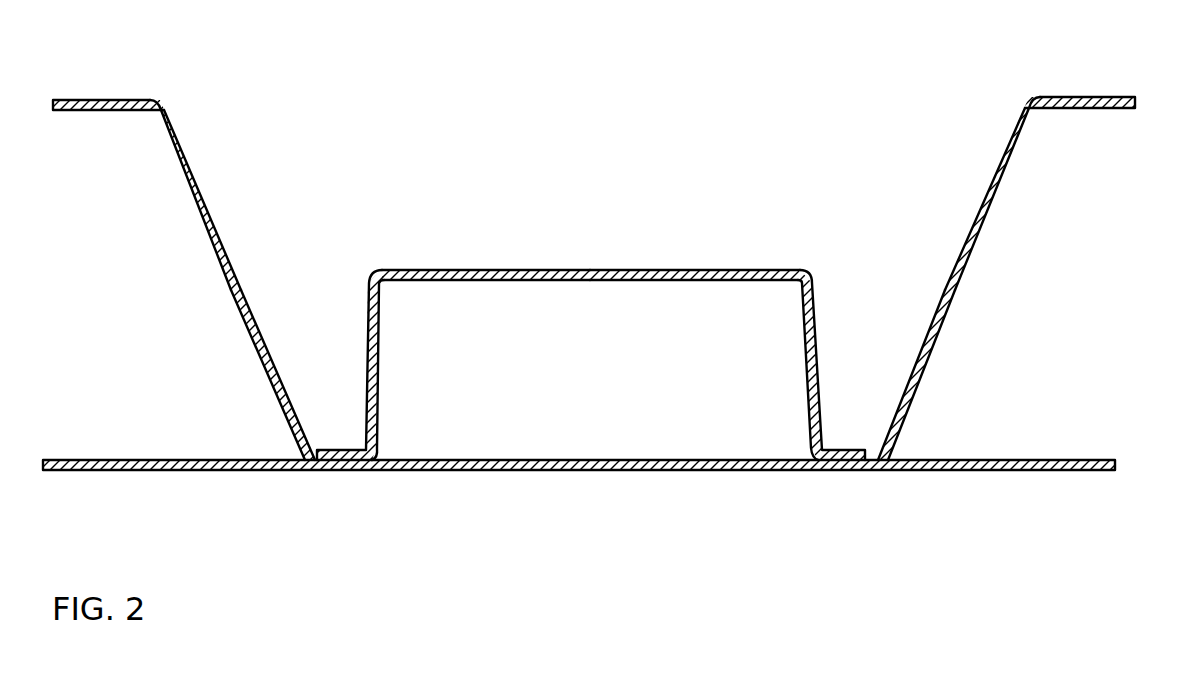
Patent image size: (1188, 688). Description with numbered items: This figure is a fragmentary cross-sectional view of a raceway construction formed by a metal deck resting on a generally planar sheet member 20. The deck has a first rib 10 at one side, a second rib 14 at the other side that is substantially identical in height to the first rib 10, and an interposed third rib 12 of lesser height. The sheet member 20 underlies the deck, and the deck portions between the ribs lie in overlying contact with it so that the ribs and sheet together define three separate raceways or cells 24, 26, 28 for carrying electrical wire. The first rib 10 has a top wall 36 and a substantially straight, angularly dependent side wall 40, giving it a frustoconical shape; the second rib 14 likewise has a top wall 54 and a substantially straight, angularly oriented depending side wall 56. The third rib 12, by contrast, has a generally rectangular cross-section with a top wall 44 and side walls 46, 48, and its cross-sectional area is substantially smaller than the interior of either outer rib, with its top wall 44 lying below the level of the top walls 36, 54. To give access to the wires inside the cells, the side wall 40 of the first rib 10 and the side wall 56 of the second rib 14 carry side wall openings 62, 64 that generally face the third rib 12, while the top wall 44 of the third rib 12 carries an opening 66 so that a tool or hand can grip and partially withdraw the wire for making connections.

The first rib 10 is at (178, 251).
The third rib 12 is at (594, 333).
The second rib 14 is at (1024, 255).
The sheet member 20 is at (165, 472).
The cell 24 is at (158, 350).
The cell 26 is at (600, 369).
The cell 28 is at (1026, 379).
The top wall 36 is at (99, 102).
The side wall 40 is at (271, 366).
The top wall 44 is at (460, 270).
The side wall 46 is at (378, 361).
The side wall 48 is at (818, 358).
The top wall 54 is at (1118, 100).
The side wall 56 is at (907, 398).
The side wall opening 62 is at (206, 216).
The side wall opening 64 is at (976, 223).
The opening 66 is at (608, 270).